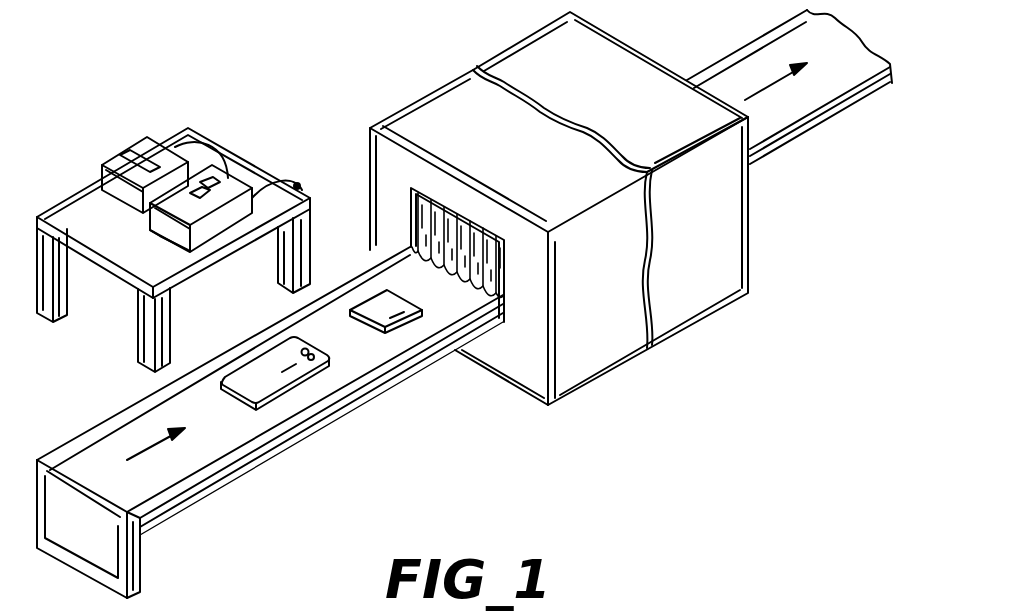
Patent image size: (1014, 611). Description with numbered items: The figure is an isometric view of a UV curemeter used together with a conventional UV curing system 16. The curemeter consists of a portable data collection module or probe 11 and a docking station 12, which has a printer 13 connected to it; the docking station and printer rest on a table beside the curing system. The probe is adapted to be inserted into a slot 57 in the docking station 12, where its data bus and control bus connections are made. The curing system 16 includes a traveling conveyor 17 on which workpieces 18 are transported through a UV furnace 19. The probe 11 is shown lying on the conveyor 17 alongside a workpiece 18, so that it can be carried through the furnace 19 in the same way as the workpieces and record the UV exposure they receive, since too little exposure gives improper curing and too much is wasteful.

The probe 11 is at (283, 370).
The docking station 12 is at (233, 178).
The printer 13 is at (143, 140).
The UV curing system 16 is at (631, 254).
The traveling conveyor 17 is at (202, 480).
The workpieces 18 is at (410, 320).
The UV furnace 19 is at (720, 278).
The slot 57 is at (170, 240).